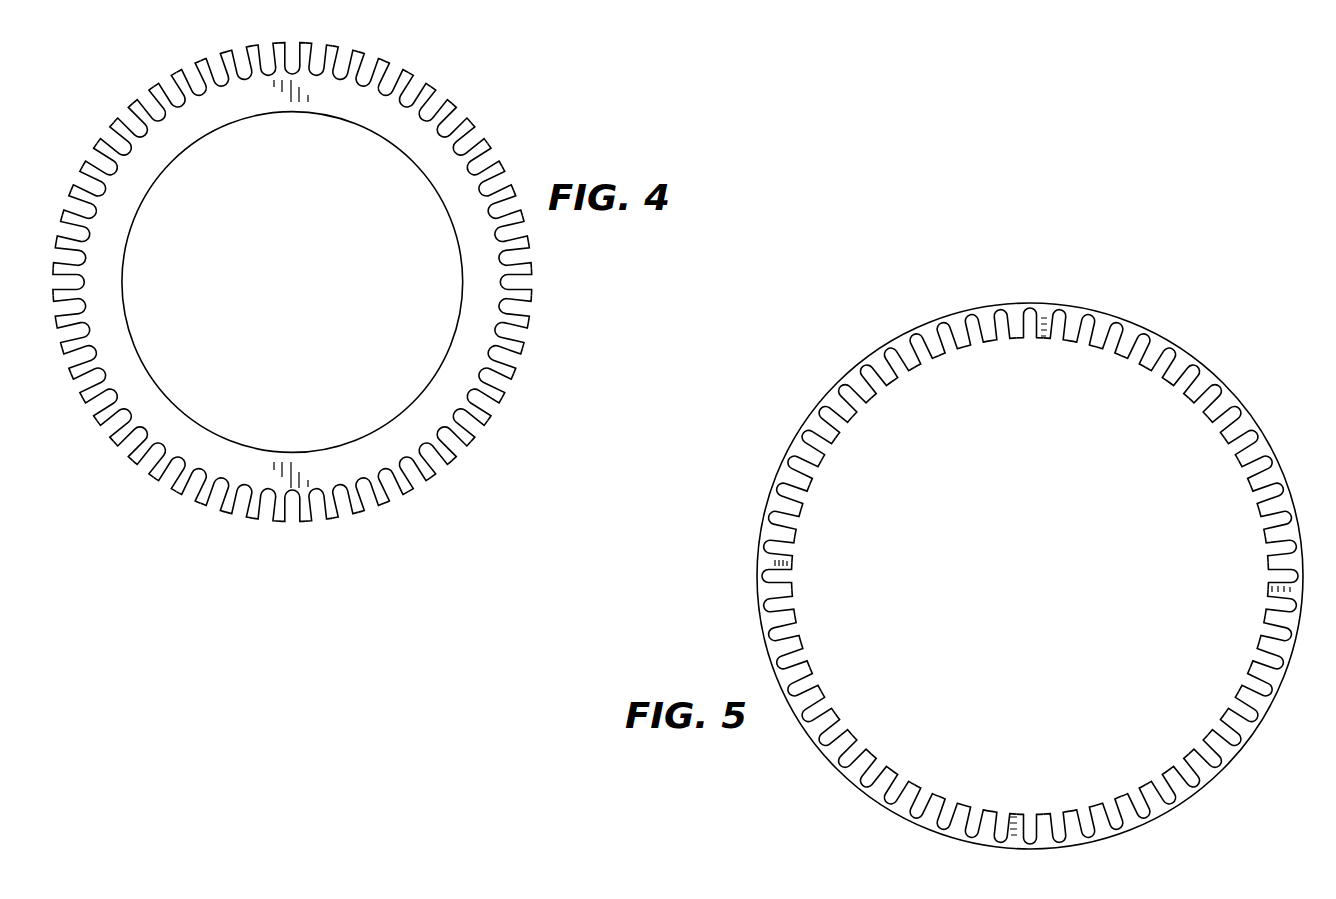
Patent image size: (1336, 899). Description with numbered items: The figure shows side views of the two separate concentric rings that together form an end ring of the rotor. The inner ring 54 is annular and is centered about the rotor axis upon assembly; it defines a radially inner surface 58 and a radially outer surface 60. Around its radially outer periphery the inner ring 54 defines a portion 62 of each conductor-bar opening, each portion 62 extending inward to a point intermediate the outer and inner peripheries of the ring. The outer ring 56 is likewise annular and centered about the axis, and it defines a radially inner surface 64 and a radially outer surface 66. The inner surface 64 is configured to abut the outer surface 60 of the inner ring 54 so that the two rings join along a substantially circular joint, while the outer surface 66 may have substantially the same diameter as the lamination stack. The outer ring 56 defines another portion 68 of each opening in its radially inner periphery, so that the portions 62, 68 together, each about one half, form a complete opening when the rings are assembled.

In FIG. 4, the inner ring 54 is at (163, 140).
In FIG. 4, the radially inner surface 58 is at (121, 292).
In FIG. 4, the radially outer surface 60 is at (100, 416).
In FIG. 4, the portion of opening 62 is at (475, 430).
In FIG. 5, the outer ring 56 is at (857, 383).
In FIG. 5, the radially inner surface 64 is at (795, 613).
In FIG. 5, the radially outer surface 66 is at (825, 757).
In FIG. 5, the portion of opening 68 is at (1110, 810).